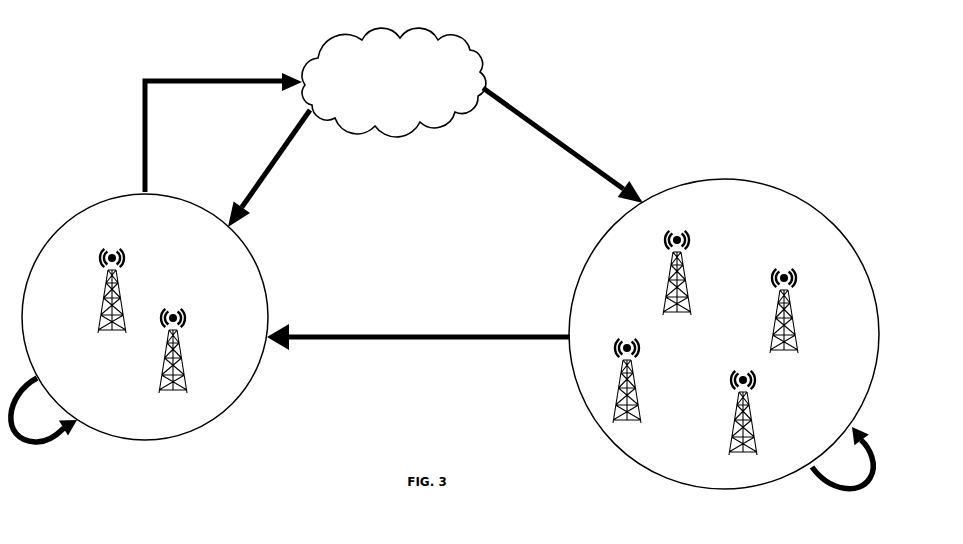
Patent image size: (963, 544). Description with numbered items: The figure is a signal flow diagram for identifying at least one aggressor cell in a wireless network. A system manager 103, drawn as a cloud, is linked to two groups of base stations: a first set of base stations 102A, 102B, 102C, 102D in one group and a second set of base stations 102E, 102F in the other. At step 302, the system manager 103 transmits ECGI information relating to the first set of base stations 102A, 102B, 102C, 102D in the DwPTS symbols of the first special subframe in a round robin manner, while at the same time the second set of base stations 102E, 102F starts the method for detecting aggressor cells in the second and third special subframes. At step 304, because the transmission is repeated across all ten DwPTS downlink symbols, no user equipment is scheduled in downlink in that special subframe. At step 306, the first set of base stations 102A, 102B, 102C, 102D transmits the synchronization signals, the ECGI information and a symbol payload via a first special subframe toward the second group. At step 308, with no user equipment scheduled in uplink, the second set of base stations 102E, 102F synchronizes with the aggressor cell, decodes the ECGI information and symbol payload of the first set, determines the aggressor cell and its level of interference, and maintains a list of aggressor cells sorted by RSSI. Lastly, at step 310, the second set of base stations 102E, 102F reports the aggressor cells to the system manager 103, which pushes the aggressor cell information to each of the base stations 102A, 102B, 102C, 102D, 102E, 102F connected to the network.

The system manager 103 is at (394, 82).
The base station of the first set of base stations 102A is at (688, 268).
The base station of the first set of base stations 102B is at (796, 312).
The base station of the first set of base stations 102C is at (756, 412).
The base station of the first set of base stations 102D is at (638, 383).
The base station of the second set of base stations 102E is at (187, 360).
The base station of the second set of base stations 102F is at (105, 297).
The step of transmitting ECGI information 302 is at (278, 173).
The step of not scheduling downlink user equipment 304 is at (880, 468).
The step of transmitting synchronization signals, ECGI information and symbol payloa 306 is at (420, 334).
The step of synchronizing and decoding aggressor cell information 308 is at (25, 447).
The step of reporting aggressor cells 310 is at (140, 104).